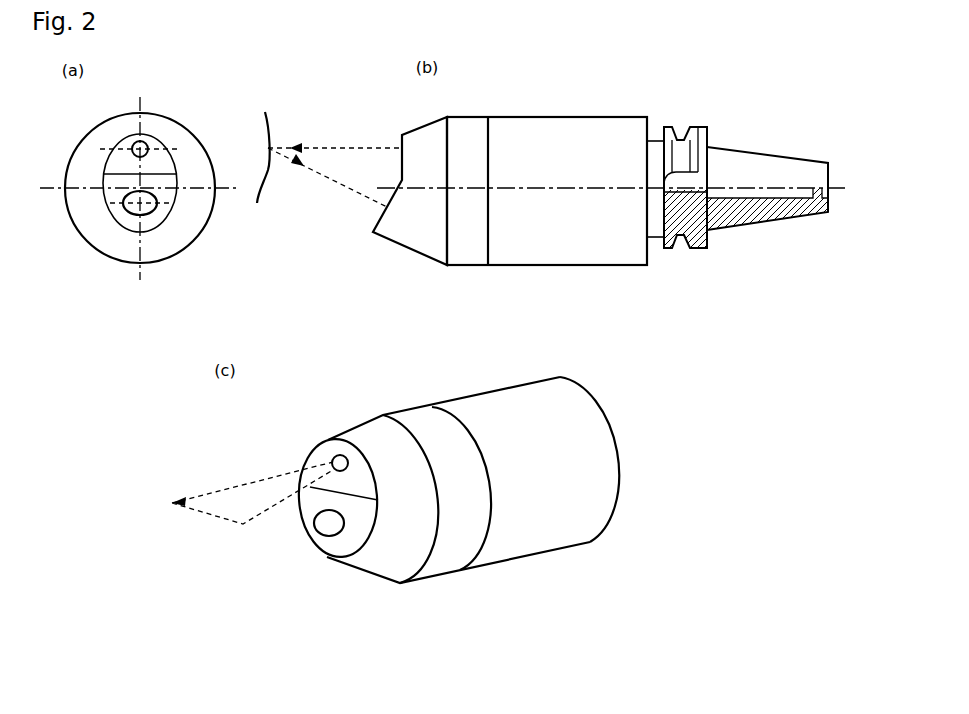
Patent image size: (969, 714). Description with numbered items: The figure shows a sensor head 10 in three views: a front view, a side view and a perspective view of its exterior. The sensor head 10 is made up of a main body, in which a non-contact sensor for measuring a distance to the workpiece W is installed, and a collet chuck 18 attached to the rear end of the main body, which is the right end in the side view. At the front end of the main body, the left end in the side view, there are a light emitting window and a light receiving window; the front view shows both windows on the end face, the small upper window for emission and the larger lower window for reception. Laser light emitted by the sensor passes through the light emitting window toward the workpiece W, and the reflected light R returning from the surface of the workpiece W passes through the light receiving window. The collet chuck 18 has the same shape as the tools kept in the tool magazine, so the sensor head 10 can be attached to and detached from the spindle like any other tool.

The sensor head 10 is at (432, 453).
The collet chuck 18 is at (740, 147).
The reflected light R is at (340, 190).
The workpiece W is at (258, 195).